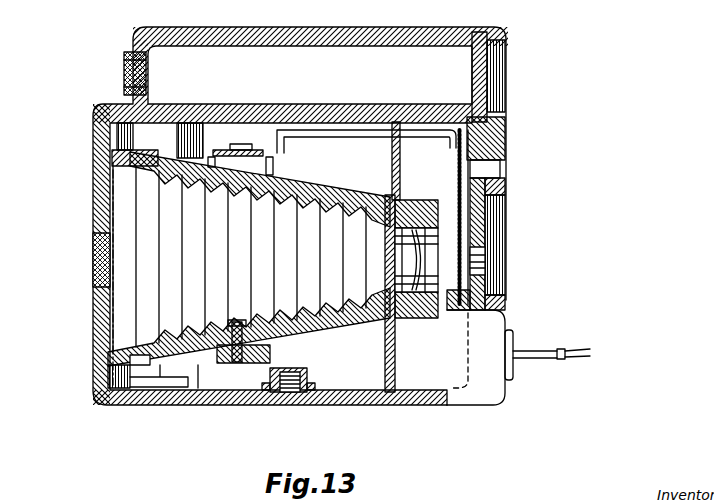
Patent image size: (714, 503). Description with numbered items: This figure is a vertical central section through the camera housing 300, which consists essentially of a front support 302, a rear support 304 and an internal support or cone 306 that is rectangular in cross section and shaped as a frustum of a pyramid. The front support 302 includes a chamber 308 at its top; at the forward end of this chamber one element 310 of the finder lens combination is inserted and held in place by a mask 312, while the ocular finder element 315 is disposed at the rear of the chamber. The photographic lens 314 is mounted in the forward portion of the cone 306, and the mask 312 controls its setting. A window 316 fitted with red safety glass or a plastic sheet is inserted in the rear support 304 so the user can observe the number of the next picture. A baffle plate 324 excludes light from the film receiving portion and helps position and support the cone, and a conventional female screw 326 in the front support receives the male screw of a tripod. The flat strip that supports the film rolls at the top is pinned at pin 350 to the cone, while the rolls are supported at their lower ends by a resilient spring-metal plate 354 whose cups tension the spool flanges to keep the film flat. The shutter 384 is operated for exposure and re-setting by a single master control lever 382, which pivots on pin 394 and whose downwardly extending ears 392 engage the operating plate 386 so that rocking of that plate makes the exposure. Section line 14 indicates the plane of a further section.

The section line 14 is at (67, 126).
The housing 300 is at (572, 138).
The front support 302 is at (370, 405).
The rear support 304 is at (97, 401).
The cone 306 is at (127, 200).
The chamber 308 is at (317, 91).
The finder lens element 310 is at (478, 73).
The mask 312 is at (506, 133).
The photographic lens 314 is at (417, 262).
The ocular finder element 315 is at (130, 73).
The window 316 is at (95, 257).
The baffle plate 324 is at (392, 160).
The female screw 326 is at (300, 400).
The pin 350 is at (258, 165).
The resilient plate 354 is at (251, 355).
The master control lever 382 is at (292, 137).
The shutter 384 is at (456, 312).
The operating plate 386 is at (457, 213).
The ears 392 is at (462, 160).
The pin 394 is at (255, 150).